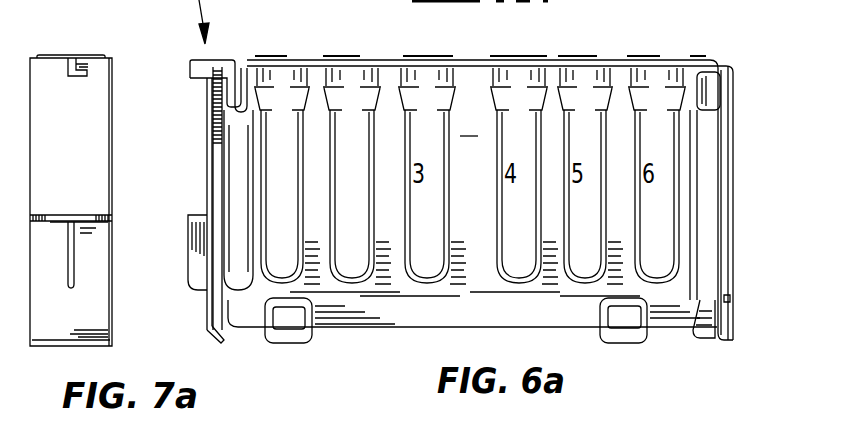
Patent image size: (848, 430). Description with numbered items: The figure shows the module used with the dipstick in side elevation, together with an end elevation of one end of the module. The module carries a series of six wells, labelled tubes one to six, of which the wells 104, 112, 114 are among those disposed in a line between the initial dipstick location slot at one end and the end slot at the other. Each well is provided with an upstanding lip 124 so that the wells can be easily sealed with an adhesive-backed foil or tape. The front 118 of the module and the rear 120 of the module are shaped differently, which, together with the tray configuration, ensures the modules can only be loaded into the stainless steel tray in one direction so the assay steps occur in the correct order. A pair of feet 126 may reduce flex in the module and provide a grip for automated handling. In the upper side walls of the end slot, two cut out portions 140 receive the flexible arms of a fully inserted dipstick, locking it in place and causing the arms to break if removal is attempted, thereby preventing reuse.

In FIG. 6A, the well 104 is at (662, 70).
In FIG. 6A, the well 112 is at (362, 80).
In FIG. 6A, the well 114 is at (288, 82).
In FIG. 7A, the front of the module 118 is at (78, 151).
In FIG. 6A, the front of the module 118 is at (205, 176).
In FIG. 6A, the rear of the module 120 is at (735, 257).
In FIG. 6A, the upstanding lip 124 is at (338, 58).
In FIG. 6A, the feet 126 is at (288, 345).
In FIG. 6A, the cut out portions 140 is at (722, 84).